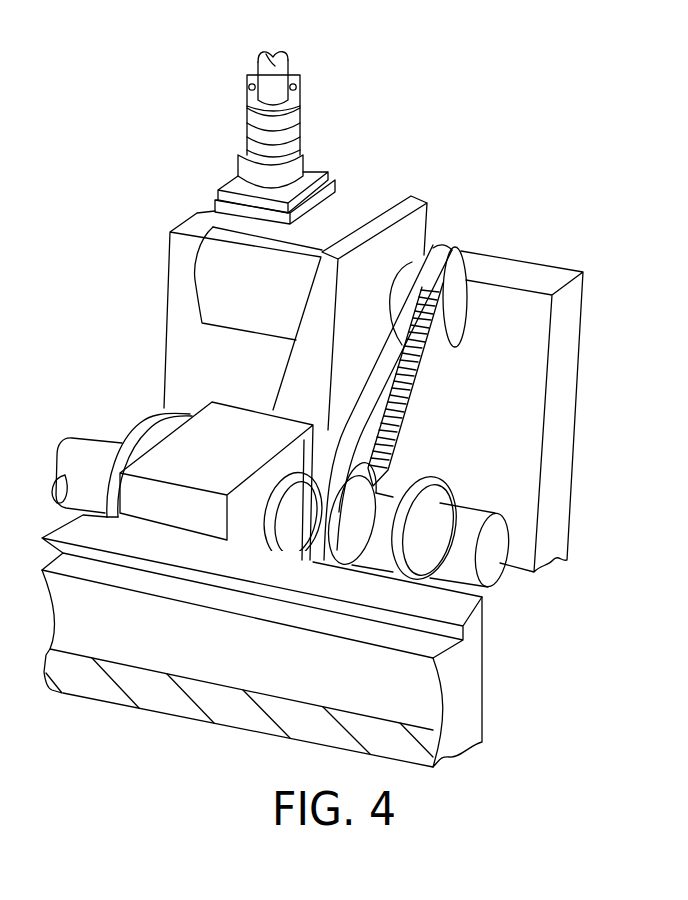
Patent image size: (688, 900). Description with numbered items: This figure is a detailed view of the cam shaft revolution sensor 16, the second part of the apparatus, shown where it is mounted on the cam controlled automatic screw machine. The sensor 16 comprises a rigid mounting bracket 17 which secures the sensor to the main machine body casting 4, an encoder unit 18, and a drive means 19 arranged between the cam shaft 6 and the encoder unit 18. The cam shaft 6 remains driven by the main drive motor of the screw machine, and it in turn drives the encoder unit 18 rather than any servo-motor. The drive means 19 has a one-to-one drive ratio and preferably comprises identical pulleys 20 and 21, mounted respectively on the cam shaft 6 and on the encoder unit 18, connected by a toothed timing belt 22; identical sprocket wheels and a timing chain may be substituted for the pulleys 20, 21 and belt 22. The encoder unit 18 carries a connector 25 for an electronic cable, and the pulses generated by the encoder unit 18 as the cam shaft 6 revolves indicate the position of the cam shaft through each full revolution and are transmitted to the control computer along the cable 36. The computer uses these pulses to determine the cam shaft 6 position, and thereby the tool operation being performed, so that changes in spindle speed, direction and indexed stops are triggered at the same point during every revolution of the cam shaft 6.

The main machine body casting 4 is at (463, 712).
The cam shaft 6 is at (460, 549).
The cam shaft revolution sensor 16 is at (449, 191).
The rigid mounting bracket 17 is at (413, 232).
The encoder unit 18 is at (213, 257).
The drive means 19 is at (487, 382).
The pulley 20 is at (380, 483).
The pulley 21 is at (455, 303).
The toothed timing belt 22 is at (408, 425).
The connector 25 is at (305, 157).
The cable 36 is at (278, 62).